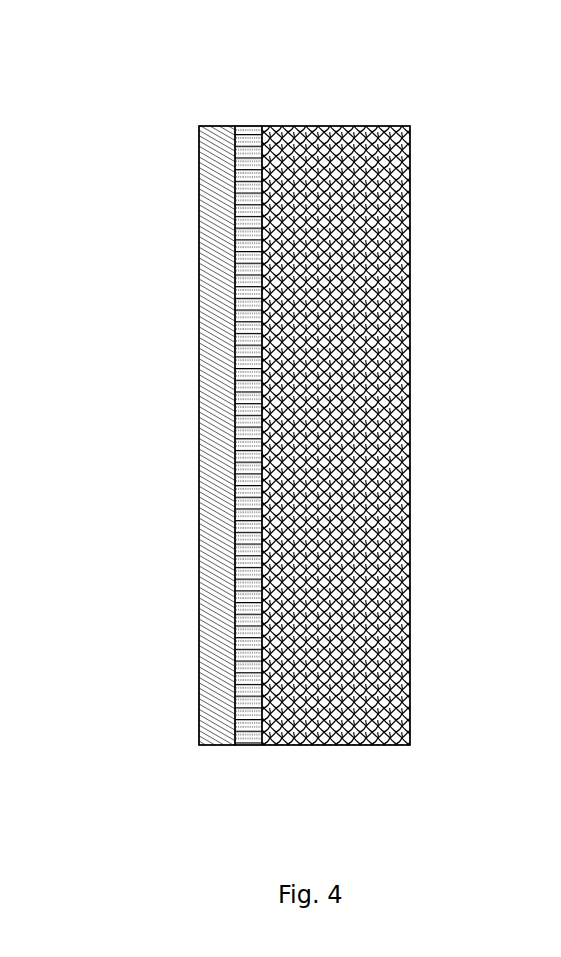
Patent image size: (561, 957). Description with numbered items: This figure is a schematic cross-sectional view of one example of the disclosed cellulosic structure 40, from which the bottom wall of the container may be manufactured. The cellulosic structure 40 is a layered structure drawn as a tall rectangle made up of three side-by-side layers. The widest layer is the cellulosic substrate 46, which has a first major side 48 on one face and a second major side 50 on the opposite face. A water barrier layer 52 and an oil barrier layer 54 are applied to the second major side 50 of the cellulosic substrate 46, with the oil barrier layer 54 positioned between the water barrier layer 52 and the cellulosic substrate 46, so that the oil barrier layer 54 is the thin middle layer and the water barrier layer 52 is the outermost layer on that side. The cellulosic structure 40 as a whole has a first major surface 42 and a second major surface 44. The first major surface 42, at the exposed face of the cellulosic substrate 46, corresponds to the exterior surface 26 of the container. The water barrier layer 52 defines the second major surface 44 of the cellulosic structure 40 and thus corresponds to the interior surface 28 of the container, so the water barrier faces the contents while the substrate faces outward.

The cellulosic structure 40 is at (366, 90).
The exterior surface 26 is at (430, 368).
The interior surface 28 is at (143, 508).
The first major surface 42 is at (412, 451).
The second major surface 44 is at (198, 328).
The cellulosic substrate 46 is at (317, 717).
The first major side 48 is at (410, 746).
The second major side 50 is at (267, 746).
The water barrier layer 52 is at (215, 731).
The oil barrier layer 54 is at (250, 746).